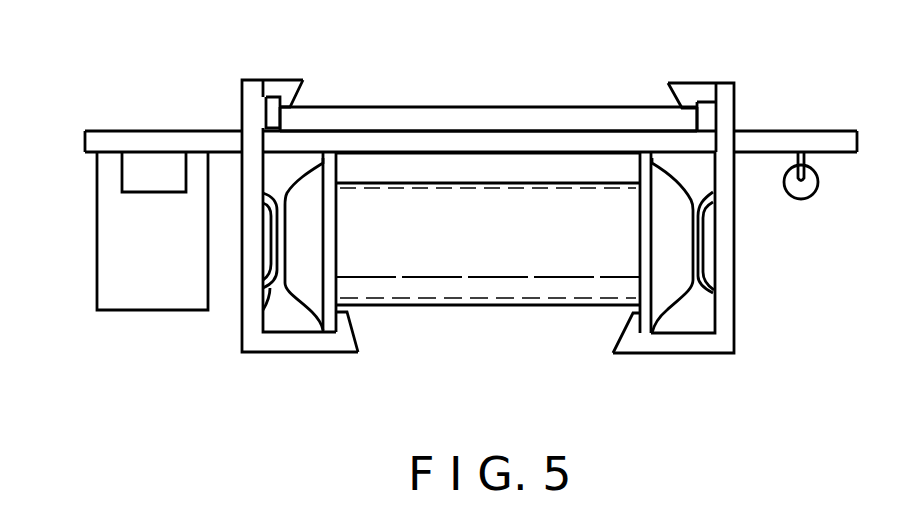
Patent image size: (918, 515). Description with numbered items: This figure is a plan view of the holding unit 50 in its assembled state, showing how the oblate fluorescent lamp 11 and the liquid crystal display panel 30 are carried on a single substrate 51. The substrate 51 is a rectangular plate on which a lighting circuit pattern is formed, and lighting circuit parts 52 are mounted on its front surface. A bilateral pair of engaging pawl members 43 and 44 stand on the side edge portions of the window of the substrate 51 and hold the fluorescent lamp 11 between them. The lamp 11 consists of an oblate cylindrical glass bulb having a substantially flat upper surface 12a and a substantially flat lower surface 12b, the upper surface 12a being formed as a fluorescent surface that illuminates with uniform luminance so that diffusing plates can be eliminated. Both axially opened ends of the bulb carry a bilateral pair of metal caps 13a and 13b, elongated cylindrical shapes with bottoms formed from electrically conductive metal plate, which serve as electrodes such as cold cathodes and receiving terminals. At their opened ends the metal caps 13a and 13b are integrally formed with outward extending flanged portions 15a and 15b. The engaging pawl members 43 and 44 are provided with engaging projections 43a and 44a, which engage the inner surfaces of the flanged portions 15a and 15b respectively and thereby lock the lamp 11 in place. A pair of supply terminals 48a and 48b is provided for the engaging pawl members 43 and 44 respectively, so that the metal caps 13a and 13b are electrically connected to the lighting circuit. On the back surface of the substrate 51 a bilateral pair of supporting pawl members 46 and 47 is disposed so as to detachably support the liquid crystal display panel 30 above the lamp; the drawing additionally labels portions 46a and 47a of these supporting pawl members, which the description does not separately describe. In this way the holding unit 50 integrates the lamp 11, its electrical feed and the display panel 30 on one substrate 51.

The fluorescent lamp 11 is at (470, 316).
The upper surface 12a is at (431, 183).
The lower surface 12b is at (530, 306).
The metal cap 13a is at (303, 290).
The metal cap 13b is at (677, 288).
The flanged portion 15a is at (338, 212).
The flanged portion 15b is at (643, 174).
The liquid crystal display panel 30 is at (511, 120).
The engaging pawl member 43 is at (268, 343).
The engaging projection 43a is at (350, 337).
The engaging pawl member 44 is at (708, 350).
The engaging projection 44a is at (616, 338).
The supporting pawl member 46 is at (268, 81).
The left post hook 46a is at (291, 97).
The supporting pawl member 47 is at (720, 84).
The right post hook 47a is at (668, 92).
The supply terminal 48a is at (272, 294).
The supply terminal 48b is at (700, 292).
The holding unit 50 is at (222, 124).
The substrate 51 is at (123, 131).
The lighting circuit parts 52 is at (137, 176).